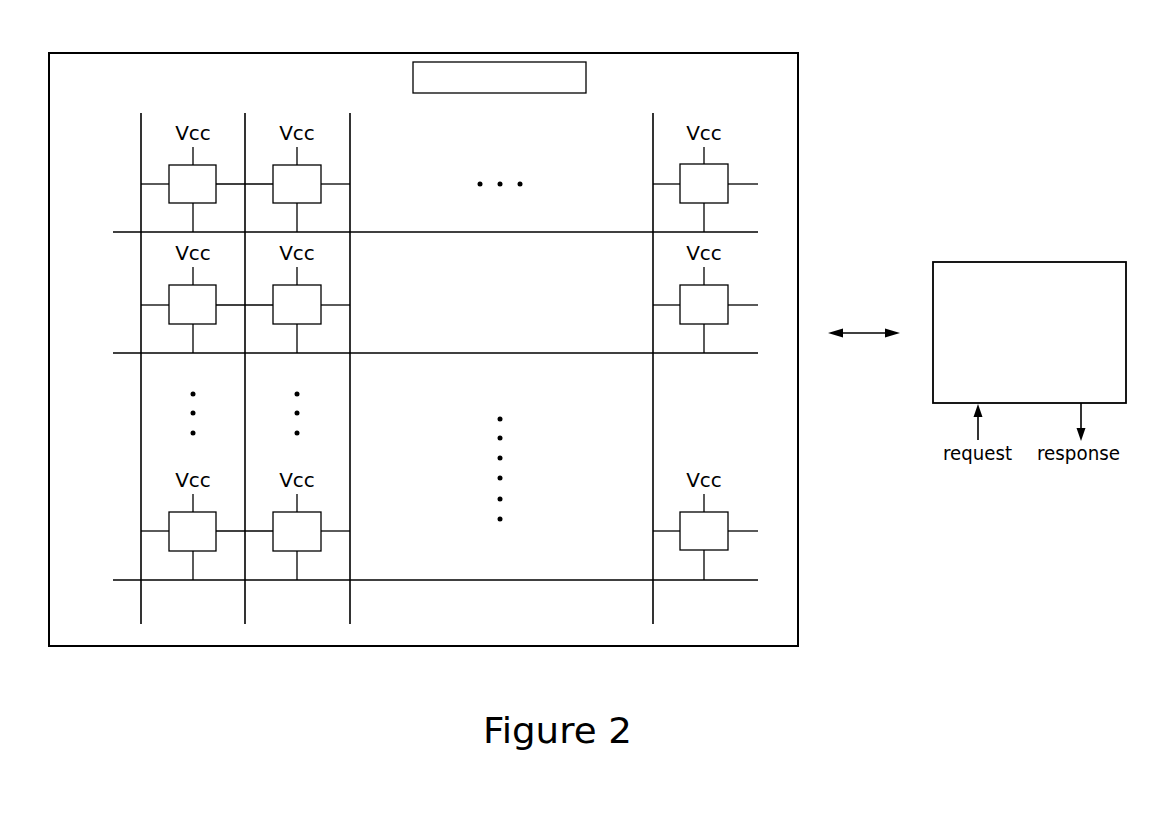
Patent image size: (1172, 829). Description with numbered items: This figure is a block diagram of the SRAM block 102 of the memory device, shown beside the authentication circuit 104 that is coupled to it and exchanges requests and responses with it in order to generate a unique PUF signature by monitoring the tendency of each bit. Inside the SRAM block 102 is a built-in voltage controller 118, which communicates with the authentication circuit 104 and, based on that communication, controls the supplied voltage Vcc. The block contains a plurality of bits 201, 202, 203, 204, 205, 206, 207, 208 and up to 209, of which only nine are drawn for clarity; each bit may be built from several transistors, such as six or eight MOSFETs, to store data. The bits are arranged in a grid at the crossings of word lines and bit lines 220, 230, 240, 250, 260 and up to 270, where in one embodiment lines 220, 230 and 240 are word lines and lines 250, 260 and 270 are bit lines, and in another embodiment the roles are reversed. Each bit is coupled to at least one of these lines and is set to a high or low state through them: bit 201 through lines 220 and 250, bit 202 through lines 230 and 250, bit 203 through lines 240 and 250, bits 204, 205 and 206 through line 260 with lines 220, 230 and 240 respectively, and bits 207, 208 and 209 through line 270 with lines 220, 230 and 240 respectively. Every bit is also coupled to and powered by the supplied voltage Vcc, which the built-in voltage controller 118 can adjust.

The SRAM block 102 is at (423, 366).
The authentication circuit 104 is at (1012, 344).
The built-in voltage controller 118 is at (486, 86).
The bit 201 is at (177, 195).
The bit 202 is at (281, 195).
The bit 203 is at (688, 195).
The bit 204 is at (177, 316).
The bit 205 is at (281, 316).
The bit 206 is at (688, 316).
The bit 207 is at (177, 542).
The bit 208 is at (281, 542).
The bit 209 is at (688, 542).
The word line/bit line 220 is at (140, 355).
The word line/bit line 230 is at (245, 355).
The word line/bit line 240 is at (652, 355).
The word line/bit line 250 is at (413, 233).
The word line/bit line 260 is at (413, 354).
The word line/bit line 270 is at (413, 581).